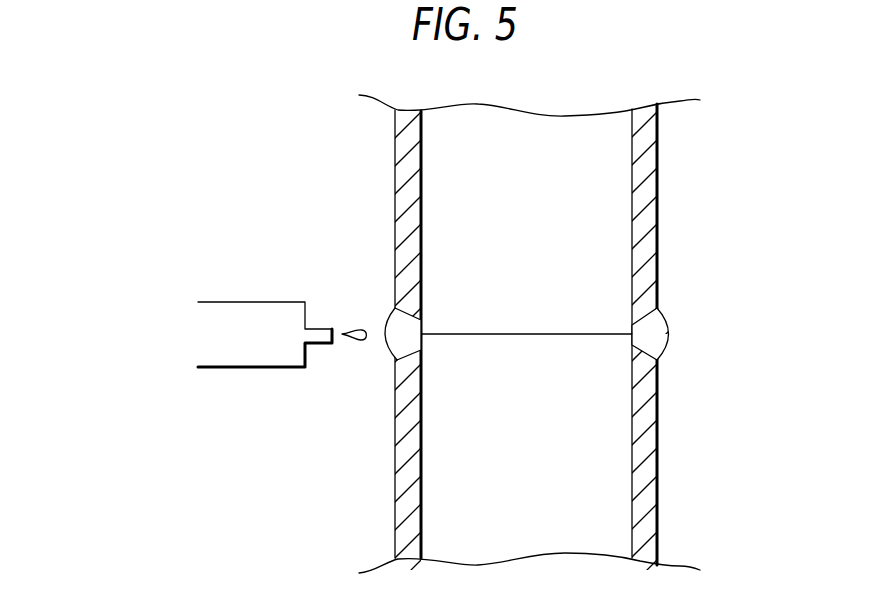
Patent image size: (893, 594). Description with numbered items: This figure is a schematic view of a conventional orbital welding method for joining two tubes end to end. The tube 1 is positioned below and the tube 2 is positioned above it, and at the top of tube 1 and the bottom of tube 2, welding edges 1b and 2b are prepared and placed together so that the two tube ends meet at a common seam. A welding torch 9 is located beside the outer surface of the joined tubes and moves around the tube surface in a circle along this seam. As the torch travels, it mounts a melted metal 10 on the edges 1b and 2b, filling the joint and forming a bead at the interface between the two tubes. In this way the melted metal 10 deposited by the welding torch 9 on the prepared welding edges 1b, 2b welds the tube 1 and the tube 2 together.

The tube 1 is at (657, 515).
The tube 2 is at (657, 155).
The welding edge 1b is at (666, 349).
The welding edge 2b is at (666, 320).
The welding torch 9 is at (250, 312).
The melted metal 10 is at (392, 357).